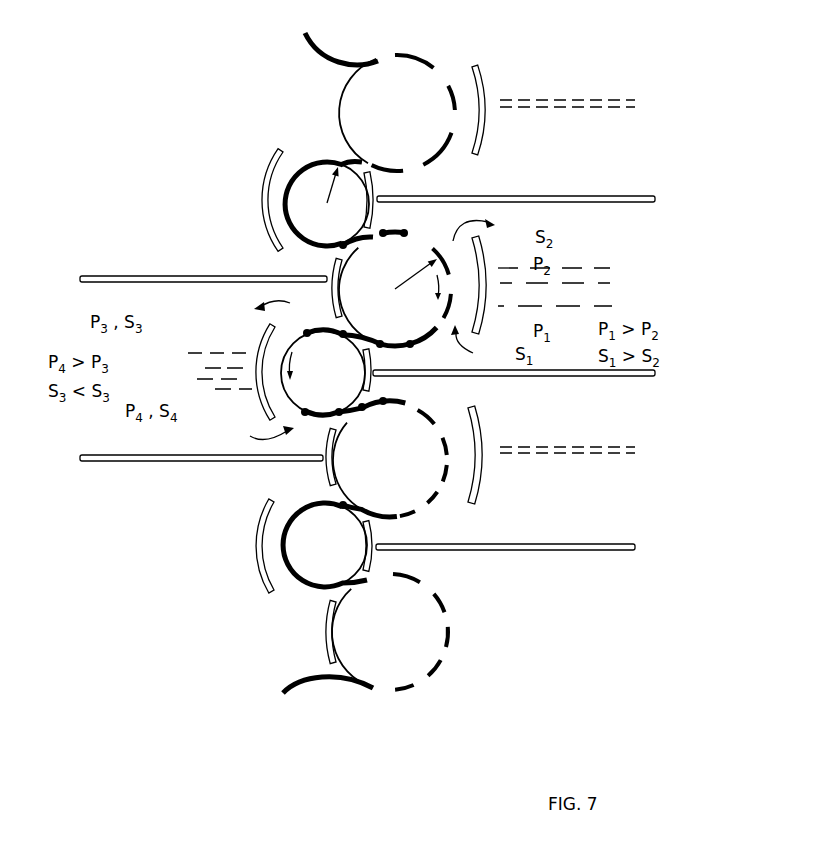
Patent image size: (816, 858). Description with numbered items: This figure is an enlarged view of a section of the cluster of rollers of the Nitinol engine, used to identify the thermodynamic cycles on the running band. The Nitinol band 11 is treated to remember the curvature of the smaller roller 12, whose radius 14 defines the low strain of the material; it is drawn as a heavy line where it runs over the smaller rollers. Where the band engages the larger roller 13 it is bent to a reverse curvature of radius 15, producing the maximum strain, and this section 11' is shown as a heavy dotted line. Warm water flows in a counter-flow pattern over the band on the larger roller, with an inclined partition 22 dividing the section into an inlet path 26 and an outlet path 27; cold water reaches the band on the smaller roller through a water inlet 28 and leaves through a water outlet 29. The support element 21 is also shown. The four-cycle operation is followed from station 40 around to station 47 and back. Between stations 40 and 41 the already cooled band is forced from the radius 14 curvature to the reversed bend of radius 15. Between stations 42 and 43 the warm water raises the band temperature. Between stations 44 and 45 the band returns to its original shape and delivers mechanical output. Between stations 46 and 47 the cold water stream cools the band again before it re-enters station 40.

The Nitinol band 11 is at (325, 350).
The Nitinol band section on larger roller 11' is at (425, 97).
The smaller roller 12 is at (366, 198).
The larger roller 13 is at (340, 117).
The radius of smaller roller 14 is at (330, 192).
The radius of larger roller 15 is at (422, 270).
The doctor blade support rod 21 is at (212, 277).
The inclined partition 22 is at (568, 287).
The inlet path 26 is at (479, 347).
The outlet path 27 is at (485, 227).
The water inlet 28 is at (254, 428).
The water outlet 29 is at (260, 304).
The station 40 is at (342, 242).
The station 41 is at (385, 231).
The station 42 is at (407, 233).
The station 43 is at (410, 341).
The station 44 is at (380, 341).
The station 45 is at (341, 336).
The station 46 is at (307, 331).
The station 47 is at (305, 410).